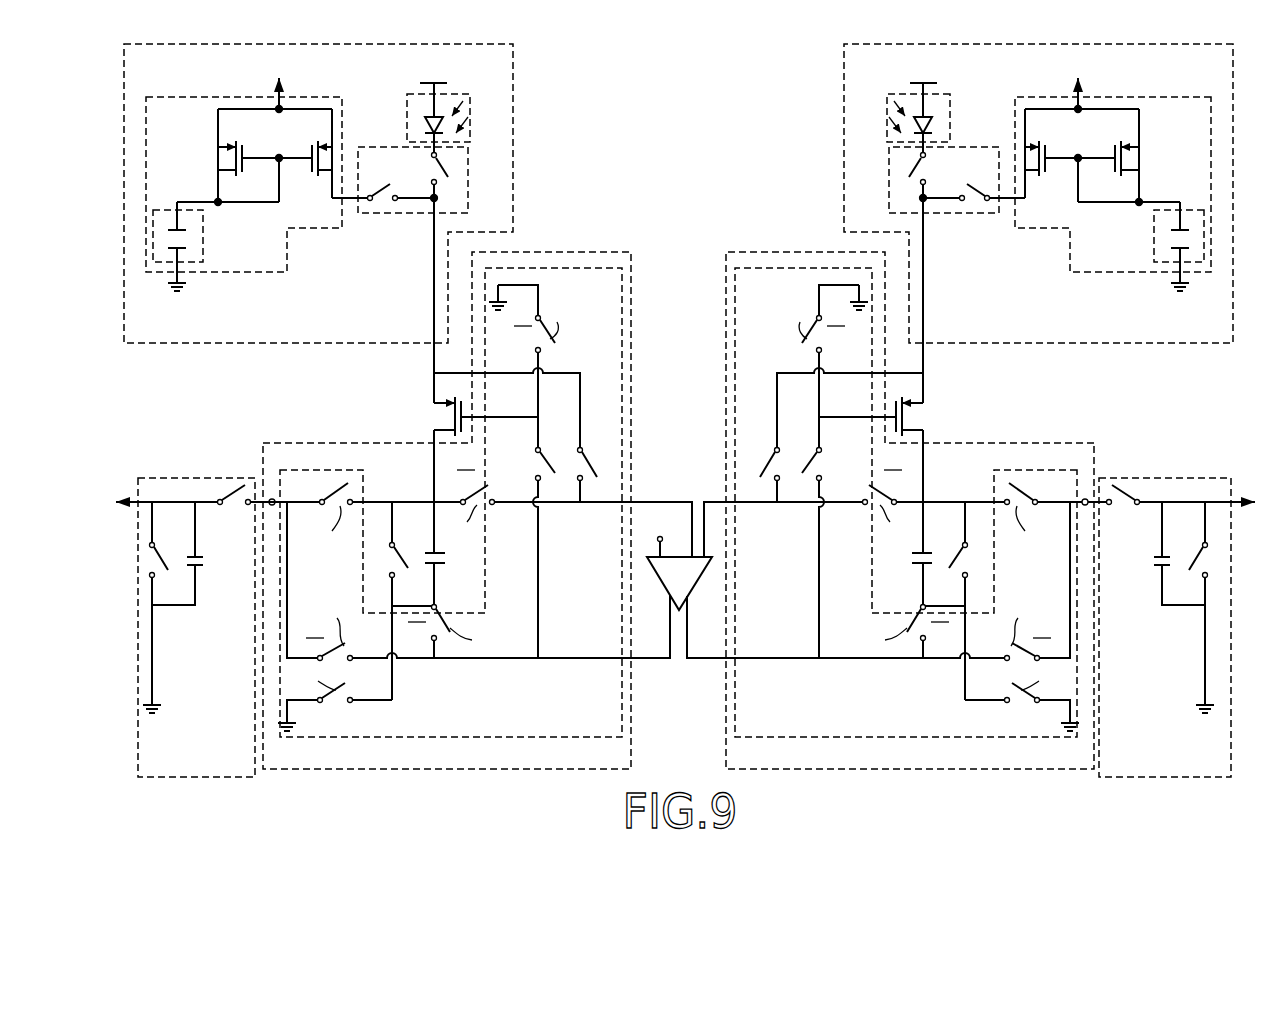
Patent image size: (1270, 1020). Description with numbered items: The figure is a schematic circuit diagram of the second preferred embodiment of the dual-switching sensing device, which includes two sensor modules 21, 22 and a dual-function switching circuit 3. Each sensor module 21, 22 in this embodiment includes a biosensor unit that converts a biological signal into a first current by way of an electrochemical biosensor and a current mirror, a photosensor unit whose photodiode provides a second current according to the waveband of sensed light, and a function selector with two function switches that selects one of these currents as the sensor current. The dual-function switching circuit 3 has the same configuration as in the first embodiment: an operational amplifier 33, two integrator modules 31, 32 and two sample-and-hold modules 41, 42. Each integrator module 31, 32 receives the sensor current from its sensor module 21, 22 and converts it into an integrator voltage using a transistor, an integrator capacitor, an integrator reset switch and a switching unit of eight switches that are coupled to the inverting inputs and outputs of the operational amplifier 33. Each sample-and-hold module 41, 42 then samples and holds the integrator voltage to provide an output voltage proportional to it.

The dual-function switching circuit 3 is at (667, 410).
The sensor module 21 is at (513, 75).
The sensor module 22 is at (843, 76).
The integrator module 31 is at (528, 252).
The integrator module 32 is at (806, 251).
The operational amplifier 33 is at (680, 612).
The sample-and-hold module 41 is at (193, 600).
The sample-and-hold module 42 is at (1173, 478).